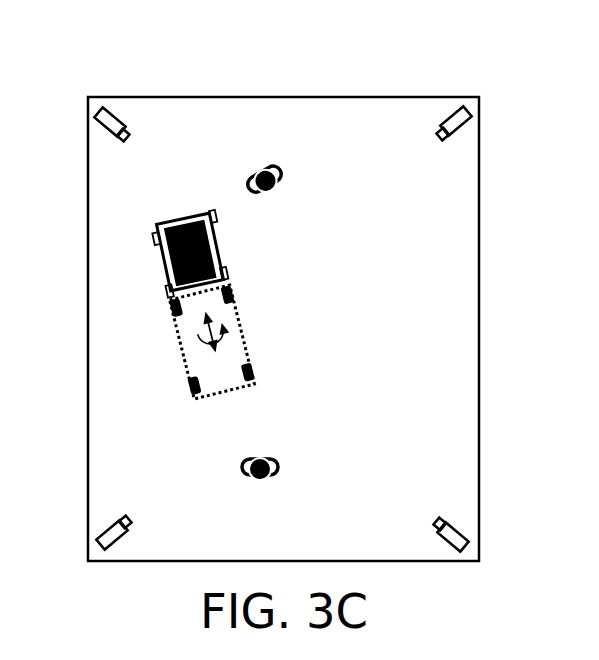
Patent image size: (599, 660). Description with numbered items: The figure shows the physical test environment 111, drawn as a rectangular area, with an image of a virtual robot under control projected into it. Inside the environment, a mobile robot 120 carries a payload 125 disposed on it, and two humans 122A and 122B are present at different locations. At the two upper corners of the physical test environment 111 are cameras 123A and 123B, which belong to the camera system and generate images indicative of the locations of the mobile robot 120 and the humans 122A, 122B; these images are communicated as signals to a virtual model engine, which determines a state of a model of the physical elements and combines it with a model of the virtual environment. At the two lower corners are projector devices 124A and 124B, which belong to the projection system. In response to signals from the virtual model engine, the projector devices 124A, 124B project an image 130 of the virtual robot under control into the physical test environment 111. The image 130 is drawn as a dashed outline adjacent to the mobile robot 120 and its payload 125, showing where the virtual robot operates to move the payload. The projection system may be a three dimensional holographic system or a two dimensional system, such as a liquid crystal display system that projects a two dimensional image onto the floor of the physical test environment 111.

The physical test environment 111 is at (101, 72).
The mobile robot 120 is at (178, 216).
The payload 125 is at (207, 242).
The image of virtual robot under control 130 is at (249, 338).
The human 122A is at (283, 182).
The human 122B is at (283, 468).
The camera 123A is at (123, 119).
The camera 123B is at (441, 125).
The projector device 124A is at (130, 533).
The projector device 124B is at (441, 542).